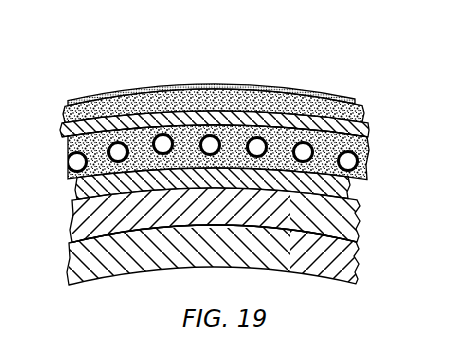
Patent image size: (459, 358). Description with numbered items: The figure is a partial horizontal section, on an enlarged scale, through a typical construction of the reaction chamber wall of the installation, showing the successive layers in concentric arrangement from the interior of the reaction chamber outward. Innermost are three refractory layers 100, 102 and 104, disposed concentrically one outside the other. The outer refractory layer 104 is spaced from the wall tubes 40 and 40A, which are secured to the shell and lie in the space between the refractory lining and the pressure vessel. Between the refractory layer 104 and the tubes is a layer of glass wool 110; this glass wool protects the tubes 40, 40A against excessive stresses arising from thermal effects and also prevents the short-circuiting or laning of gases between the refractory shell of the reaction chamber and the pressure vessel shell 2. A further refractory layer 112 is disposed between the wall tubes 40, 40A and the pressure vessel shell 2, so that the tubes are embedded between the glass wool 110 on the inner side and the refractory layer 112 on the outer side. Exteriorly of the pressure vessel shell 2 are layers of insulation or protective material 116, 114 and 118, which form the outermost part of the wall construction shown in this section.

The pressure vessel shell 2 is at (58, 142).
The wall tube 40 is at (171, 132).
The wall tube 40A is at (218, 132).
The refractory layer 100 is at (85, 260).
The refractory layer 102 is at (78, 226).
The refractory layer 104 is at (77, 197).
The layer of glass wool 110 is at (77, 179).
The refractory layer 112 is at (70, 149).
The layer of insulation or protective material 114 is at (63, 127).
The layer of insulation or protective material 116 is at (63, 108).
The layer of insulation or protective material 118 is at (70, 100).